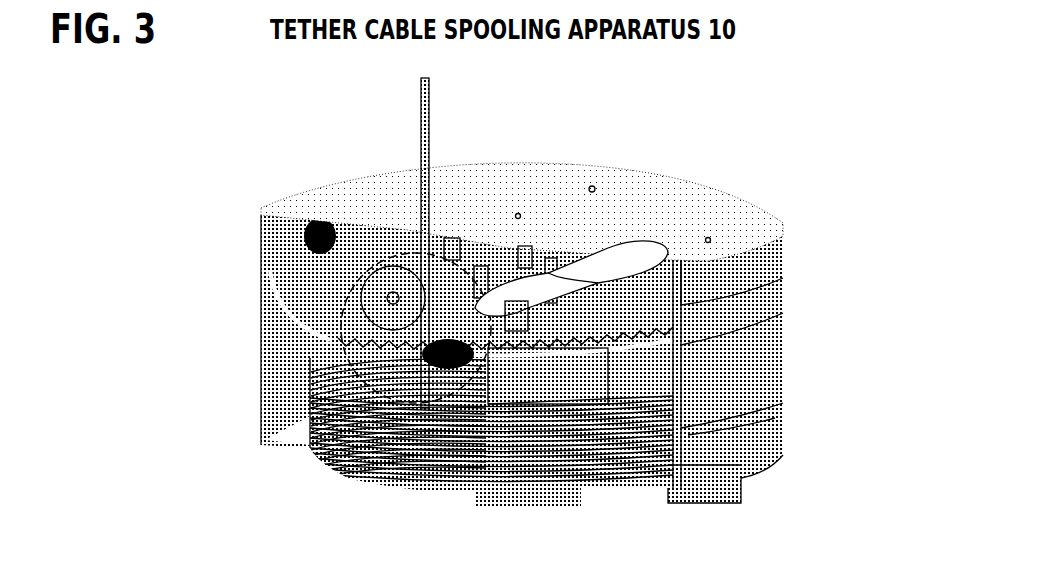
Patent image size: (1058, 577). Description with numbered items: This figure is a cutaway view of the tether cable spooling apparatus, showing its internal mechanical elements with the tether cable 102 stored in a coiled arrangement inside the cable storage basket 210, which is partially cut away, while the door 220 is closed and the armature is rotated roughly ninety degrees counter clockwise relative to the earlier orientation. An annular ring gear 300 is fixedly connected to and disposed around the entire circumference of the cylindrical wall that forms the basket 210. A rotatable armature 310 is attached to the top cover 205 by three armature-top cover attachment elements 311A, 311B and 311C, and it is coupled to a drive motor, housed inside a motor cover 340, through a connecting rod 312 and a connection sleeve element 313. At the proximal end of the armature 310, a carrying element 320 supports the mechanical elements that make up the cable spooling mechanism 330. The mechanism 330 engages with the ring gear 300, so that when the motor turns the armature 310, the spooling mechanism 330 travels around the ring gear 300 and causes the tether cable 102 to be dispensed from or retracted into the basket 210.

The tether cable 102 is at (413, 100).
The top cover 205 is at (755, 257).
The cable storage basket 210 is at (683, 463).
The door 220 is at (753, 384).
The annular ring gear 300 is at (312, 314).
The rotatable armature 310 is at (542, 253).
The armature-top cover attachment element 311A is at (584, 181).
The armature-top cover attachment element 311B is at (517, 242).
The armature-top cover attachment element 311C is at (444, 233).
The connecting rod 312 is at (535, 282).
The connection sleeve element 313 is at (522, 308).
The carrying element 320 is at (473, 262).
The cable spooling mechanism 330 is at (357, 242).
The motor cover 340 is at (548, 376).